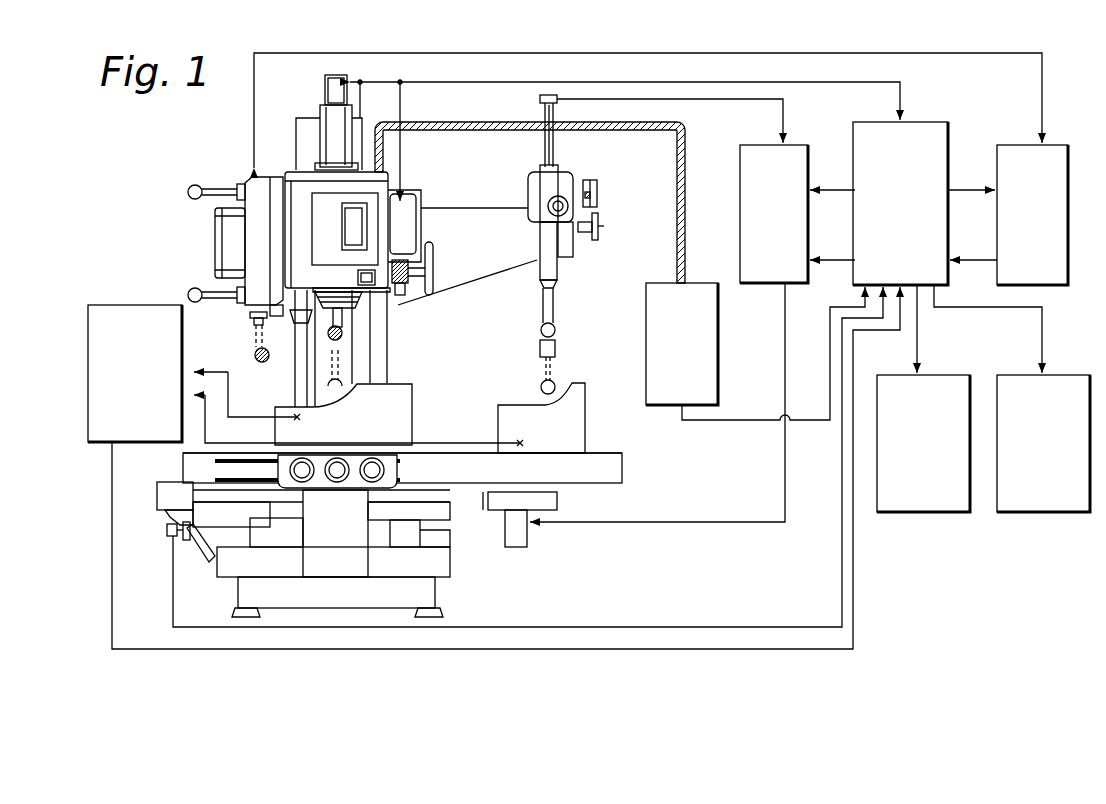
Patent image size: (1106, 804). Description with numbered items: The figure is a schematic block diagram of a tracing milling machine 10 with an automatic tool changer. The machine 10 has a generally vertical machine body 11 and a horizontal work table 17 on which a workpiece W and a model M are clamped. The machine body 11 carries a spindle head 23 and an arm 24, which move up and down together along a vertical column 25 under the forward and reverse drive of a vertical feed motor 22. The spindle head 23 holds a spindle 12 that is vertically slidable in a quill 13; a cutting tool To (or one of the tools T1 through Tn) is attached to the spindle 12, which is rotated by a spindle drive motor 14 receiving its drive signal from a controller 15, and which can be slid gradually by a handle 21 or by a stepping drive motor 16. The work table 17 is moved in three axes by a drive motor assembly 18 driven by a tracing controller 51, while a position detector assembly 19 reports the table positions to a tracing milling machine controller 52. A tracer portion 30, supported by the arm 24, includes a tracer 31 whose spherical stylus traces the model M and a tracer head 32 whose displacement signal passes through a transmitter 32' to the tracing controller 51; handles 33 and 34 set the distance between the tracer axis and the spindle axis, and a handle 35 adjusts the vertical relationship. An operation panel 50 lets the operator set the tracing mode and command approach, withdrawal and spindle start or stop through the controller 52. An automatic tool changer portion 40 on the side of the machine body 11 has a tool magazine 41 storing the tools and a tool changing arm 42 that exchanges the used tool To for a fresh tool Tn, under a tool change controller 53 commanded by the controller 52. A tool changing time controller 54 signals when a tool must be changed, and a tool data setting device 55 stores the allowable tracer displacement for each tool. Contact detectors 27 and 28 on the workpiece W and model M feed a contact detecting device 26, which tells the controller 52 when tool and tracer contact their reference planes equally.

The tracing milling machine 10 is at (432, 344).
The machine body 11 is at (380, 170).
The spindle 12 is at (362, 293).
The quill 13 is at (388, 306).
The spindle drive motor 14 is at (327, 138).
The controller 15 is at (328, 83).
The drive motor 16 is at (403, 205).
The work table 17 is at (623, 472).
The drive motor assembly 18 is at (515, 547).
The position detector assembly 19 is at (168, 540).
The handle 21 is at (433, 296).
The vertical feed motor 22 is at (298, 118).
The spindle head 23 is at (297, 183).
The arm 24 is at (478, 209).
The vertical column 25 is at (383, 378).
The contact detecting device 26 is at (130, 303).
The contact detector 27 is at (302, 417).
The contact detector 28 is at (525, 443).
The tracer portion 30 is at (564, 290).
The tracer 31 is at (556, 330).
The tracer head 32 is at (574, 255).
The transmitter 32' is at (529, 127).
The handle 33 is at (585, 185).
The handle 34 is at (592, 215).
The handle 35 is at (547, 203).
The automatic tool changer portion 40 is at (212, 227).
The tool magazine 41 is at (253, 247).
The tool changing arm 42 is at (298, 322).
The operation panel 50 is at (718, 315).
The tracing controller 51 is at (755, 145).
The tracing milling machine controller 52 is at (923, 122).
The tool change controller 53 is at (1005, 145).
The tool changing time controller 54 is at (1040, 513).
The tool data setting device 55 is at (922, 513).
The workpiece W is at (409, 408).
The model M is at (587, 407).
The cutting tool T1 is at (217, 183).
The cutting tool Tn is at (197, 302).
The cutting tool To is at (343, 337).